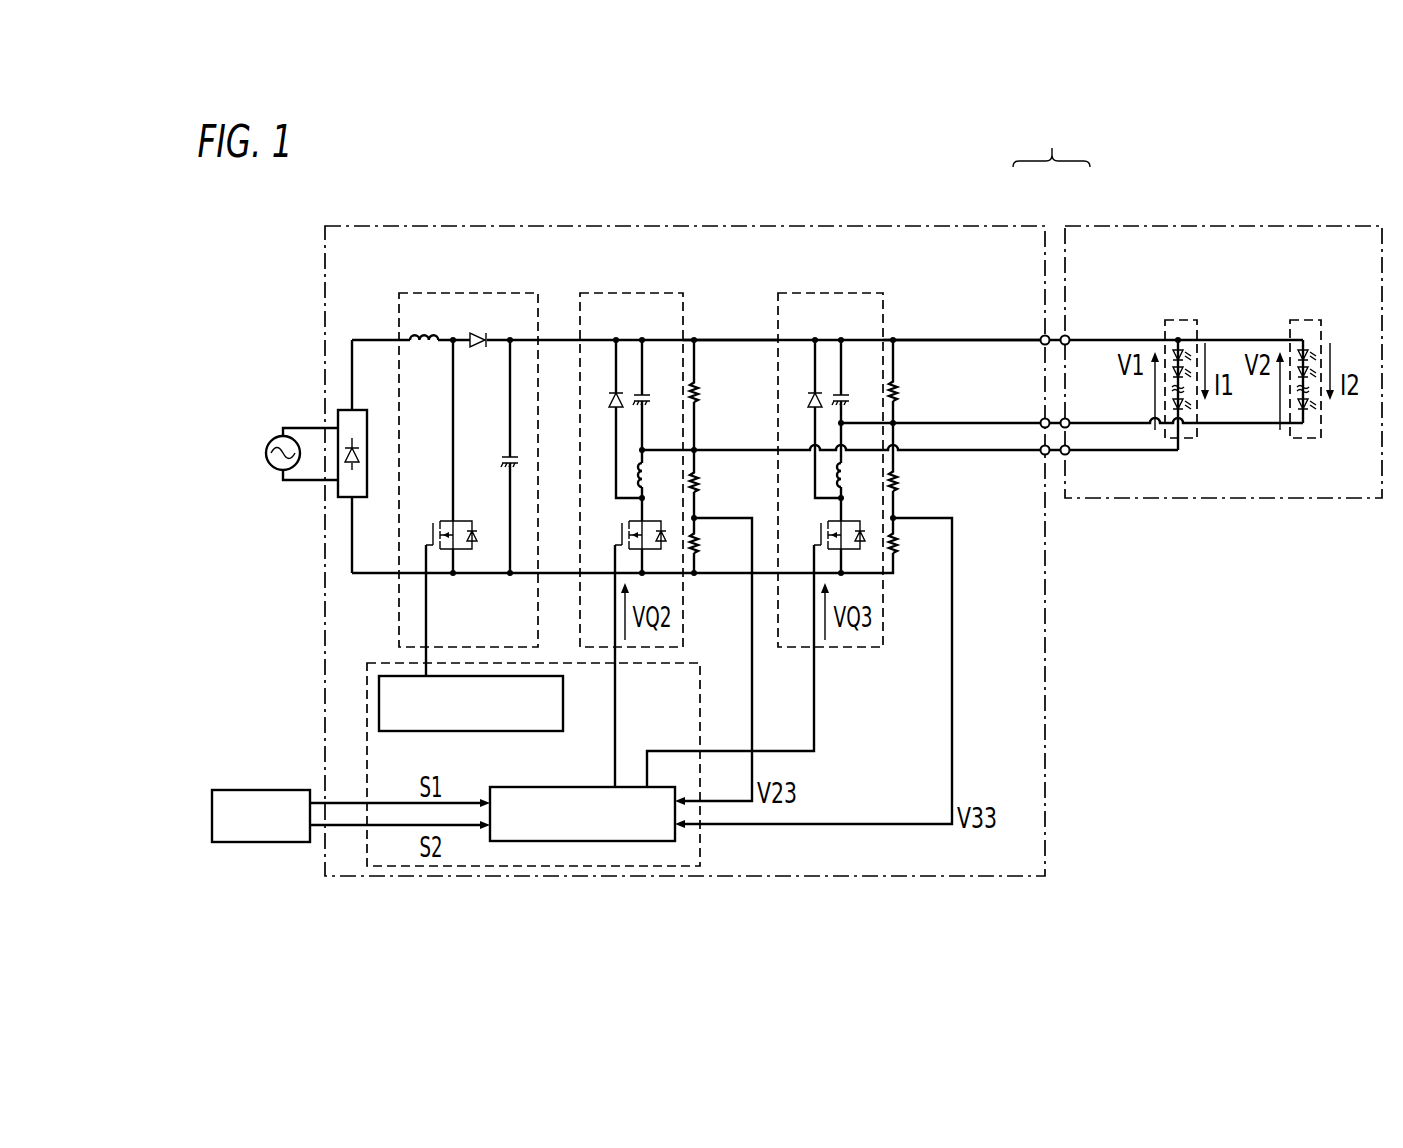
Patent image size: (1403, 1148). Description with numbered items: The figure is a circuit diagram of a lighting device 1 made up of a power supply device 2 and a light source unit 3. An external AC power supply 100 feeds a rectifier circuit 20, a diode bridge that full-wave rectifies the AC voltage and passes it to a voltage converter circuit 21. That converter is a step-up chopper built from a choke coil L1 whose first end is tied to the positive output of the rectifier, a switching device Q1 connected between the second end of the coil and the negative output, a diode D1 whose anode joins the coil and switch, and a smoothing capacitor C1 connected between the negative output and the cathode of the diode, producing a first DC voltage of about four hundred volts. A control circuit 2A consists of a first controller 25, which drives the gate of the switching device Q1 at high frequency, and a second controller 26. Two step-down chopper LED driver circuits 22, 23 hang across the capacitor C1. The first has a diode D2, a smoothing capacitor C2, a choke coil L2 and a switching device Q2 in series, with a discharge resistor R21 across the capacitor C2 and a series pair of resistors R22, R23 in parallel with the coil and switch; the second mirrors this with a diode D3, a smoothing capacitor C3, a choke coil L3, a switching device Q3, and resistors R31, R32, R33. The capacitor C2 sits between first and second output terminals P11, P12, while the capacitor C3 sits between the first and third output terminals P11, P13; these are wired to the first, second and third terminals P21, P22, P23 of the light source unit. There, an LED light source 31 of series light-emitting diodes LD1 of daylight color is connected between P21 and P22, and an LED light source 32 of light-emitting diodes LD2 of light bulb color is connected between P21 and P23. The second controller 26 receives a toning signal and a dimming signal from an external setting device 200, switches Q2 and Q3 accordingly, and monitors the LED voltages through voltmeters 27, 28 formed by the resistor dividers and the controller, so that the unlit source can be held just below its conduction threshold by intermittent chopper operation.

The lighting device 1 is at (1051, 144).
The power supply device 2 is at (1021, 223).
The light source unit 3 is at (1088, 223).
The control circuit 2A is at (378, 662).
The rectifier circuit 20 is at (357, 410).
The voltage converter circuit 21 is at (511, 293).
The LED driver circuit 22 is at (640, 293).
The LED driver circuit 23 is at (841, 293).
The first controller 25 is at (565, 690).
The second controller 26 is at (512, 787).
The voltmeter 27 is at (712, 357).
The voltmeter 28 is at (910, 357).
The LED light source 31 is at (1192, 440).
The LED light source 32 is at (1317, 440).
The AC power supply 100 is at (268, 437).
The setting device 200 is at (244, 789).
The choke coil L1 is at (424, 321).
The diode D1 is at (481, 324).
The smoothing capacitor C1 is at (499, 456).
The switching device Q1 is at (447, 506).
The diode D2 is at (617, 419).
The smoothing capacitor C2 is at (652, 395).
The choke coil L2 is at (657, 485).
The switching device Q2 is at (627, 649).
The resistor R21 is at (716, 395).
The resistor R22 is at (716, 485).
The resistor R23 is at (716, 547).
The diode D3 is at (815, 419).
The smoothing capacitor C3 is at (851, 381).
The choke coil L3 is at (856, 472).
The switching device Q3 is at (756, 649).
The resistor R31 is at (915, 381).
The resistor R32 is at (915, 472).
The resistor R33 is at (915, 539).
The first output terminal P11 is at (1026, 323).
The second output terminal P12 is at (1026, 464).
The third output terminal P13 is at (1026, 407).
The first terminal P21 is at (1086, 323).
The second terminal P22 is at (1086, 464).
The third terminal P23 is at (1086, 407).
The light-emitting diode LD1 is at (1181, 346).
The light-emitting diode LD2 is at (1306, 346).